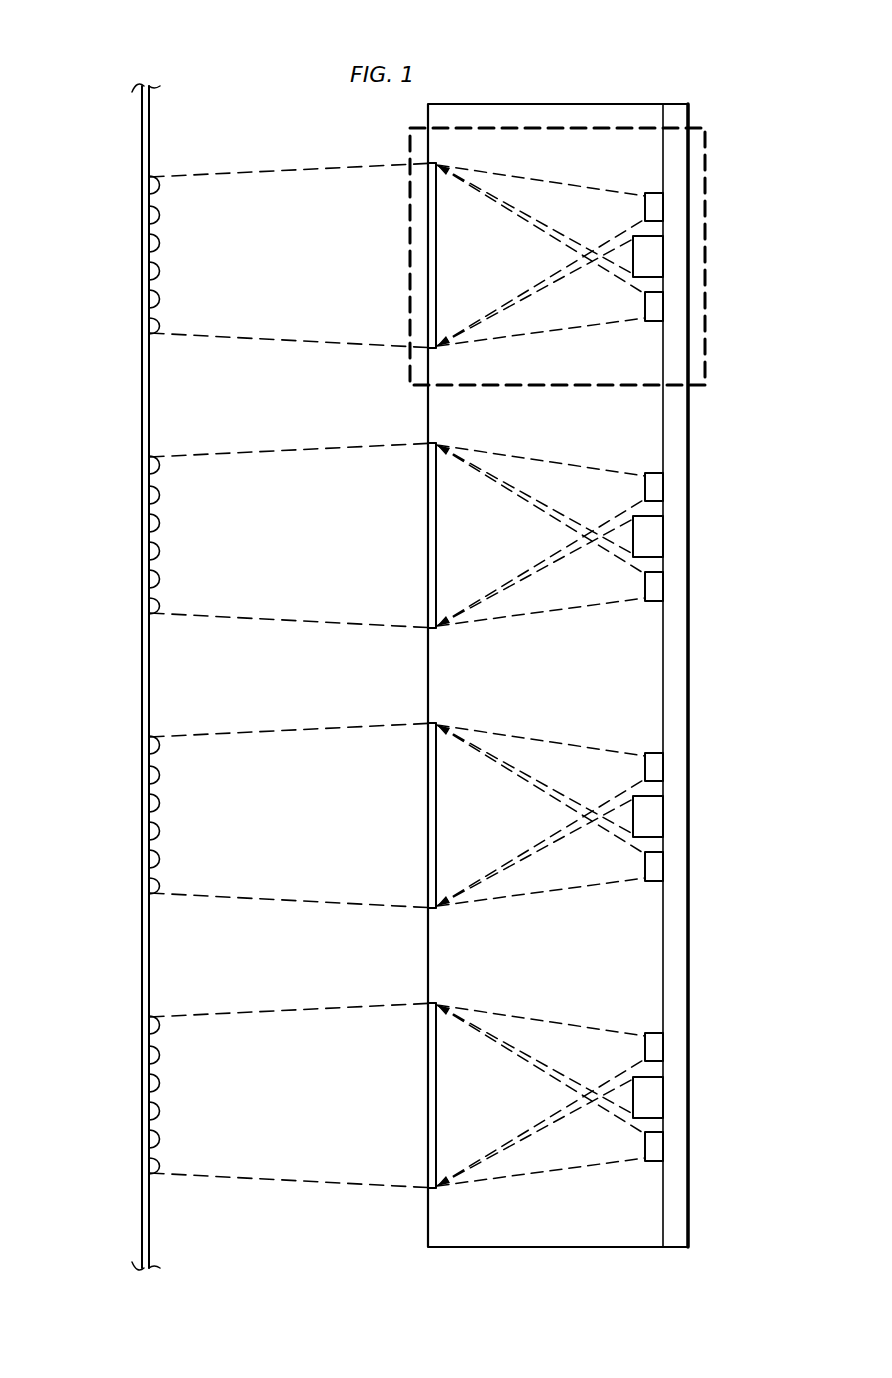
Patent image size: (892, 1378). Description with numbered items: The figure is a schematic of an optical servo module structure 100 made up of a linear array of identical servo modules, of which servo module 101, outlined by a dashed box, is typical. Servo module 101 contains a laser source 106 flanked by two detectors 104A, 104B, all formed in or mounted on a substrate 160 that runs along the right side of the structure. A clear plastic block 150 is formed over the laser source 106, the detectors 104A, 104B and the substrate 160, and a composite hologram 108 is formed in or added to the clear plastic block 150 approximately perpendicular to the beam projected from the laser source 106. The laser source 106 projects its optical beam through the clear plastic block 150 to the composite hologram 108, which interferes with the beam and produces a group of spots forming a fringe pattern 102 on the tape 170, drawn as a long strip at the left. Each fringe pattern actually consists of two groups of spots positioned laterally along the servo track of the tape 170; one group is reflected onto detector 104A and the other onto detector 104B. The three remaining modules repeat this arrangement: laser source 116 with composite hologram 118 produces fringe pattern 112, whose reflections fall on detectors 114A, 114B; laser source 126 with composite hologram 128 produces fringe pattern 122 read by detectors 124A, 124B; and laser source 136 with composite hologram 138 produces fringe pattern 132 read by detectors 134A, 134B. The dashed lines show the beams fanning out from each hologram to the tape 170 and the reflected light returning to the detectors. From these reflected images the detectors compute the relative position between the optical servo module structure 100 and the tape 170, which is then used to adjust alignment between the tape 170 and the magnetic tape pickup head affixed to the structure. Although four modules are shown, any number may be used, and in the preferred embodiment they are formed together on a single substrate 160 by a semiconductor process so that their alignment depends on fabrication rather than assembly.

The optical servo module structure 100 is at (270, 56).
The servo module 101 is at (705, 180).
The fringe pattern 102 is at (160, 243).
The detector 104A is at (646, 196).
The detector 104B is at (650, 321).
The laser source 106 is at (653, 251).
The composite hologram 108 is at (436, 253).
The fringe pattern 112 is at (160, 523).
The detector 114A is at (646, 476).
The detector 114B is at (650, 601).
The laser source 116 is at (653, 532).
The composite hologram 118 is at (436, 533).
The fringe pattern 122 is at (160, 803).
The detector 124A is at (646, 755).
The detector 124B is at (650, 881).
The laser source 126 is at (650, 822).
The composite hologram 128 is at (436, 812).
The fringe pattern 132 is at (160, 1083).
The detector 134A is at (646, 1035).
The detector 134B is at (650, 1161).
The laser source 136 is at (650, 1102).
The composite hologram 138 is at (436, 1093).
The clear plastic block 150 is at (558, 1247).
The substrate 160 is at (682, 653).
The tape 170 is at (141, 666).